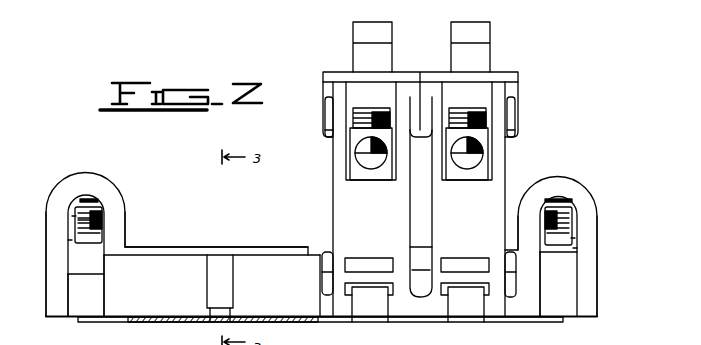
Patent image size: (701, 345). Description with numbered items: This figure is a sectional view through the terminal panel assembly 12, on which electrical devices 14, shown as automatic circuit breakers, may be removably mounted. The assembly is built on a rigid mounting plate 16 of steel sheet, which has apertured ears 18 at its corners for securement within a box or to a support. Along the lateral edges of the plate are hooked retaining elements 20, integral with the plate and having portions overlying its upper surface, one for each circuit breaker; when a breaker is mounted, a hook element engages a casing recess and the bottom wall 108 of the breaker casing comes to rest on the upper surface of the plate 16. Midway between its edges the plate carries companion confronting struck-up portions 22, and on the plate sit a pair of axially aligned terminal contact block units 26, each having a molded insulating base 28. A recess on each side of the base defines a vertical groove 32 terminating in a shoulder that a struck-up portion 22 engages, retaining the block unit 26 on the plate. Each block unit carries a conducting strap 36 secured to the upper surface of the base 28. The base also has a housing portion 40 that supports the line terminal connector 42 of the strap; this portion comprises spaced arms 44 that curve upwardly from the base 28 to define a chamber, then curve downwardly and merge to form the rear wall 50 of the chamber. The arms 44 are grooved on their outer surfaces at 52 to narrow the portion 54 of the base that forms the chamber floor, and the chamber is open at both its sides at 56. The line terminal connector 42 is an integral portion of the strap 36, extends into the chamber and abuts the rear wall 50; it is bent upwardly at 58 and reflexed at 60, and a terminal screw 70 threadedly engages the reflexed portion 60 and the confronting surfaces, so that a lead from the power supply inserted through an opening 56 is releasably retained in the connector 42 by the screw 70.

The terminal panel assembly 12 is at (571, 112).
The electrical devices 14 is at (328, 67).
The mounting plate 16 is at (162, 328).
The apertured ears 18 is at (108, 318).
The hooked retaining elements 20 is at (375, 317).
The struck-up portions 22 is at (213, 317).
The terminal contact block units 26 is at (40, 293).
The insulating base 28 is at (172, 262).
The vertical groove 32 is at (224, 258).
The conducting strap 36 is at (271, 243).
The housing portion 40 is at (92, 182).
The line terminal connector 42 is at (73, 229).
The spaced arms 44 is at (112, 198).
The rear wall 50 is at (52, 210).
The grooves 52 is at (103, 276).
The narrowed portion 54 is at (68, 262).
The side openings 56 is at (68, 240).
The upwardly bent portion 58 is at (72, 217).
The reflexed portion 60 is at (94, 204).
The terminal screw 70 is at (100, 221).
The bottom wall 108 is at (342, 317).